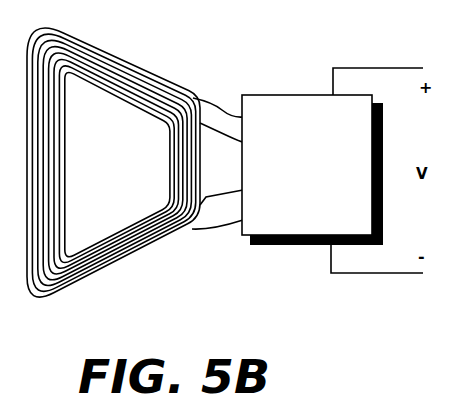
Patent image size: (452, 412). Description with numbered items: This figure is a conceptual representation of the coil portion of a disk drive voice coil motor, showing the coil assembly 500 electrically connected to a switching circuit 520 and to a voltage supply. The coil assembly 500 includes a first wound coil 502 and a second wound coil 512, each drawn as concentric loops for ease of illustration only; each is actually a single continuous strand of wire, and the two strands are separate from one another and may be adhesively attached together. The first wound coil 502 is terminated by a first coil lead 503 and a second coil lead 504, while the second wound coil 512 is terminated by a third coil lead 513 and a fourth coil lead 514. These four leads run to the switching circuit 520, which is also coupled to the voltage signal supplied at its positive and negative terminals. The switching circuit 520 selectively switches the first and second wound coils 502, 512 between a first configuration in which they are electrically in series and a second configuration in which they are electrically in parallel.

The coil assembly 500 is at (190, 43).
The first wound coil 502 is at (86, 284).
The first coil lead 503 is at (211, 104).
The second coil lead 504 is at (207, 227).
The second wound coil 512 is at (123, 244).
The third coil lead 513 is at (203, 128).
The fourth coil lead 514 is at (212, 193).
The switching circuit 520 is at (276, 95).